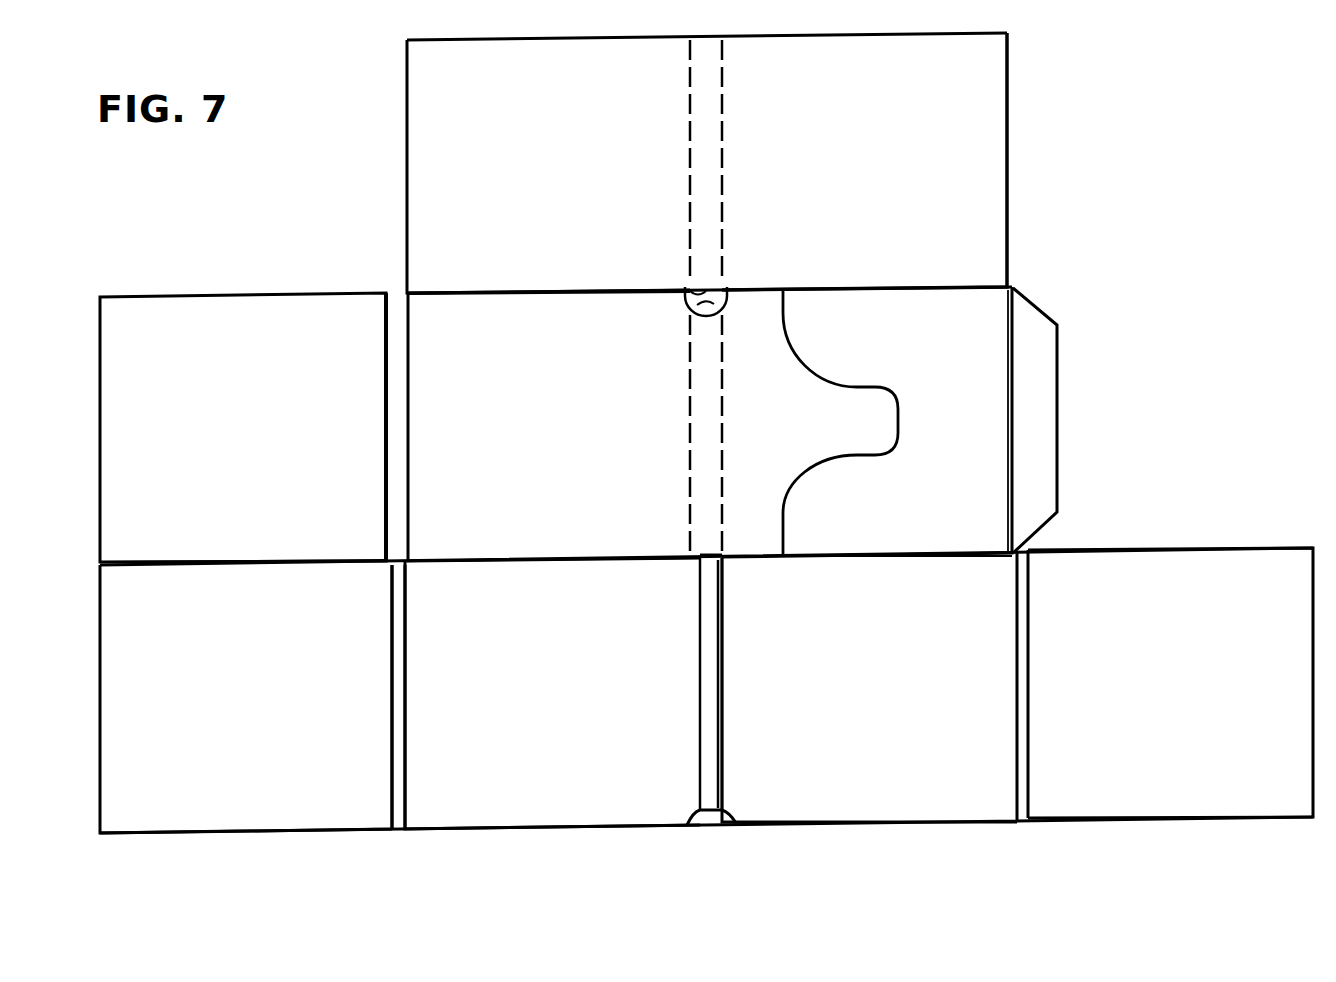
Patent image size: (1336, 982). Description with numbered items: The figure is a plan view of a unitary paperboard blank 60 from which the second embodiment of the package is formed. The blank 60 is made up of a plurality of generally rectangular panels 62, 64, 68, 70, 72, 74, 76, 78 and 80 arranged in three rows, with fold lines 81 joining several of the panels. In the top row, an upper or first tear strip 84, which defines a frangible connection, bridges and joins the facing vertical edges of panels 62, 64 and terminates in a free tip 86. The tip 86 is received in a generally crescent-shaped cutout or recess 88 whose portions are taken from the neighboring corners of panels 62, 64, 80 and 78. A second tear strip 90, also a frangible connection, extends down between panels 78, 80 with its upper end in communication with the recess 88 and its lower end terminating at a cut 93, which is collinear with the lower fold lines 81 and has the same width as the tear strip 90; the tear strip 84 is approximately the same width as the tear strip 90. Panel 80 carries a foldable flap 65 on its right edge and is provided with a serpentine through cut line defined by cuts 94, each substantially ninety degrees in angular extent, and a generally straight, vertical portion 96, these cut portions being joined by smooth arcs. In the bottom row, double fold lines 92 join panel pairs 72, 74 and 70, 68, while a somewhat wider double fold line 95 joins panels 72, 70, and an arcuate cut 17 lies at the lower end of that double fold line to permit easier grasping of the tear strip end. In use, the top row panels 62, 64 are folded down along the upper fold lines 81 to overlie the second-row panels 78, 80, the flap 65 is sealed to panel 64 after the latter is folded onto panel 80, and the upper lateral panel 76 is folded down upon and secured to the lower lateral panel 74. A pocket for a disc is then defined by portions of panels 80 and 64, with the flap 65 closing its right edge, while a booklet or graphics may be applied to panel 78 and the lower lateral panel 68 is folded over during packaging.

The unitary blank 60 is at (1180, 162).
The panel 62 is at (556, 155).
The panel 64 is at (860, 155).
The foldable flap 65 is at (1058, 406).
The lower lateral panel 68 is at (1188, 697).
The panel 70 is at (879, 703).
The panel 72 is at (571, 707).
The lower lateral panel 74 is at (258, 707).
The upper lateral panel 76 is at (248, 437).
The panel 78 is at (564, 437).
The panel 80 is at (950, 503).
The fold lines 81 is at (505, 291).
The first tear strip 84 is at (690, 80).
The free tip 86 is at (728, 290).
The cutout or recess 88 is at (700, 305).
The second tear strip 90 is at (706, 478).
The double fold lines 92 is at (396, 768).
The cut 93 is at (708, 556).
The cuts 94 is at (790, 312).
The double fold line 95 is at (708, 757).
The cut portion 96 is at (900, 418).
The arcuate cut 17 is at (708, 814).